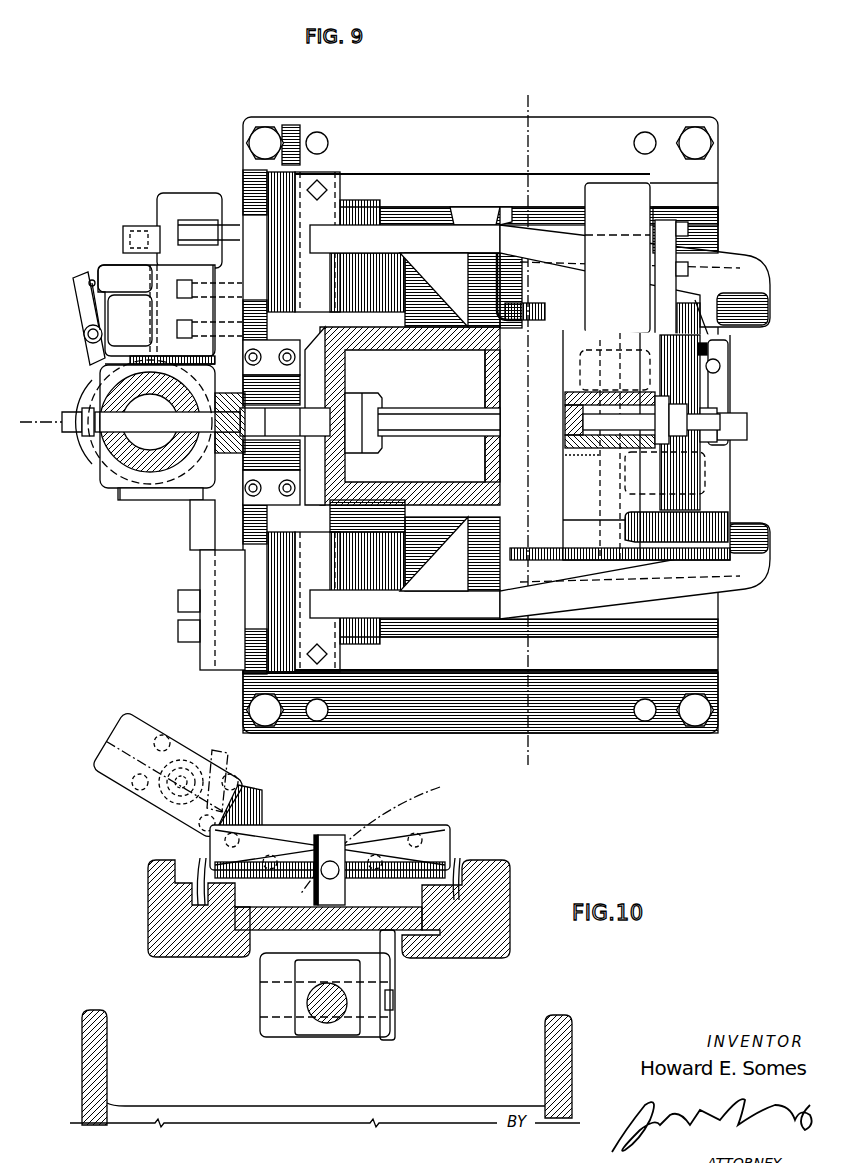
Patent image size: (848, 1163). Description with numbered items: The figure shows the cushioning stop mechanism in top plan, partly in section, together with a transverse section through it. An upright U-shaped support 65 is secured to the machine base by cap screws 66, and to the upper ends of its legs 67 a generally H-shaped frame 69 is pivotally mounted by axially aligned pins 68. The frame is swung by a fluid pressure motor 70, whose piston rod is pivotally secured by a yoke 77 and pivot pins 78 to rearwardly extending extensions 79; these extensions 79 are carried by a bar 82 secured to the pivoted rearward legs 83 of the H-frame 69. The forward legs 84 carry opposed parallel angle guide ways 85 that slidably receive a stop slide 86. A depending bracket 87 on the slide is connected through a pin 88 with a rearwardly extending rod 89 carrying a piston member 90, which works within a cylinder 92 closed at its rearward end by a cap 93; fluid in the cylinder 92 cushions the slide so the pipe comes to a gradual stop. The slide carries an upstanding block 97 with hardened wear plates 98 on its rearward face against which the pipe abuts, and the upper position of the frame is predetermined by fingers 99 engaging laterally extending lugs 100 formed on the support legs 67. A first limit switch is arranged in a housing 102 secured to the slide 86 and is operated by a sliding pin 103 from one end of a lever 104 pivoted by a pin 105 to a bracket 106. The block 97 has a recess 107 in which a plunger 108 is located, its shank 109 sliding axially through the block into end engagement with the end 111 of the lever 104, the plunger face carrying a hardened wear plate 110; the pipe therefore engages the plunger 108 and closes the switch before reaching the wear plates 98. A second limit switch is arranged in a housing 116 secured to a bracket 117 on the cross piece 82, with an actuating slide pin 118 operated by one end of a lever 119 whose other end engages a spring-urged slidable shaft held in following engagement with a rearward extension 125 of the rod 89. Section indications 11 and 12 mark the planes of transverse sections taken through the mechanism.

In FIG. 9, the section line 11- 11 is at (505, 98).
In FIG. 9, the section line / bolt 12 is at (154, 423).
In FIG. 9, the upright U-shaped support 65 is at (243, 681).
In FIG. 9, the cap screws 66 is at (700, 140).
In FIG. 9, the legs 67 is at (397, 178).
In FIG. 10, the legs 67 is at (107, 1054).
In FIG. 9, the pins 68 is at (262, 652).
In FIG. 9, the H-shaped frame 69 is at (430, 590).
In FIG. 10, the H-shaped frame 69 is at (510, 935).
In FIG. 9, the fluid pressure motor 70 is at (95, 458).
In FIG. 9, the yoke 77 is at (110, 466).
In FIG. 9, the pivot pins 78 is at (150, 502).
In FIG. 9, the rearwardly extending extensions 79 is at (118, 501).
In FIG. 9, the bar 82 is at (215, 571).
In FIG. 9, the rearward legs 83 is at (405, 248).
In FIG. 9, the forward legs 84 is at (740, 270).
In FIG. 10, the forward legs 84 is at (150, 918).
In FIG. 9, the angle guide ways 85 is at (760, 302).
In FIG. 10, the angle guide ways 85 is at (200, 858).
In FIG. 9, the stop slide 86 is at (585, 488).
In FIG. 10, the stop slide 86 is at (395, 965).
In FIG. 10, the depending bracket 87 is at (393, 990).
In FIG. 10, the pin 88 is at (262, 1003).
In FIG. 9, the rod 89 is at (468, 440).
In FIG. 10, the rod 89 is at (325, 1018).
In FIG. 9, the piston member 90 is at (440, 470).
In FIG. 9, the cylinder 92 is at (470, 480).
In FIG. 9, the cap 93 is at (322, 495).
In FIG. 9, the upstanding block 97 is at (563, 506).
In FIG. 10, the upstanding block 97 is at (450, 830).
In FIG. 9, the hardened wear plates 98 is at (570, 455).
In FIG. 10, the hardened wear plates 98 is at (378, 832).
In FIG. 9, the fingers 99 is at (504, 214).
In FIG. 9, the laterally extending lugs 100 is at (470, 213).
In FIG. 9, the housing 102 is at (617, 258).
In FIG. 9, the sliding pin 103 is at (700, 300).
In FIG. 9, the lever 104 is at (730, 386).
In FIG. 9, the pin 105 is at (720, 366).
In FIG. 9, the bracket 106 is at (707, 348).
In FIG. 9, the recess 107 is at (565, 400).
In FIG. 10, the recess 107 is at (345, 835).
In FIG. 9, the plunger 108 is at (565, 442).
In FIG. 10, the plunger 108 is at (318, 835).
In FIG. 9, the shank 109 is at (568, 425).
In FIG. 9, the hardened wear plate 110 is at (520, 430).
In FIG. 10, the hardened wear plate 110 is at (332, 860).
In FIG. 9, the end of the lever 111 is at (735, 412).
In FIG. 9, the housing 116 is at (170, 278).
In FIG. 9, the bracket 117 is at (140, 226).
In FIG. 9, the actuating slide pin 118 is at (92, 280).
In FIG. 9, the lever 119 is at (82, 320).
In FIG. 9, the rearward extension 125 is at (285, 422).